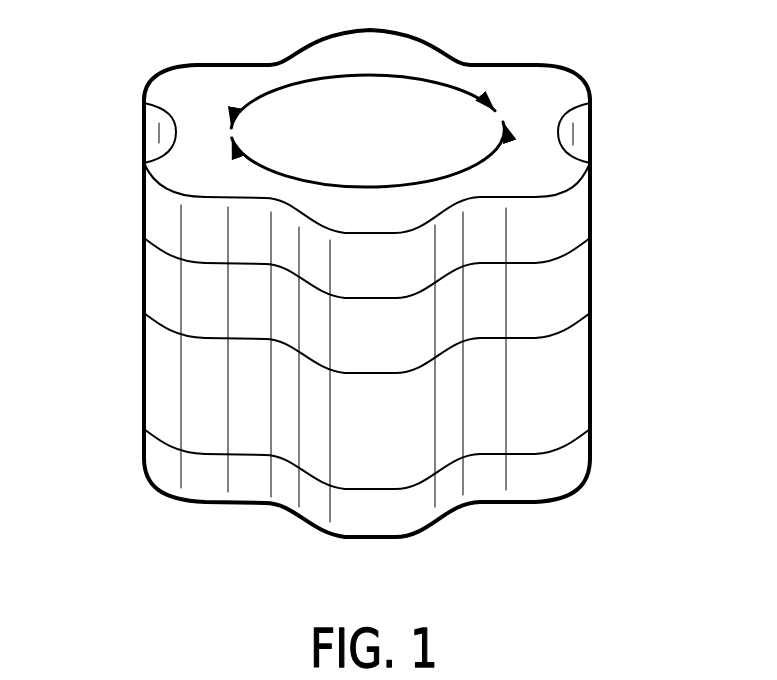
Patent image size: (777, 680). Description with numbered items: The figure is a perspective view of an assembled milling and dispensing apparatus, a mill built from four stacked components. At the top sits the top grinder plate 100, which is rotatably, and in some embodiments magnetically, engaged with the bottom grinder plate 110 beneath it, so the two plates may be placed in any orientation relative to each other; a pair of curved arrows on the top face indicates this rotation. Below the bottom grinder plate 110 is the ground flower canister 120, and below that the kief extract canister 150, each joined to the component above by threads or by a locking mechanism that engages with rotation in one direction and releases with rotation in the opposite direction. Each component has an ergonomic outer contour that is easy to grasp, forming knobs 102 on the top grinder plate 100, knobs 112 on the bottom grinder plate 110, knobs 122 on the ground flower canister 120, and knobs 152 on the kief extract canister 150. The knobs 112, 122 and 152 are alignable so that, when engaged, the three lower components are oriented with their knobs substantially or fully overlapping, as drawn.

The top grinder plate 100 is at (545, 230).
The knobs 102 is at (163, 227).
The bottom grinder plate 110 is at (545, 300).
The knobs 112 is at (163, 302).
The ground flower canister 120 is at (545, 390).
The knobs 122 is at (163, 392).
The kief extract canister 150 is at (545, 477).
The knobs 152 is at (163, 473).